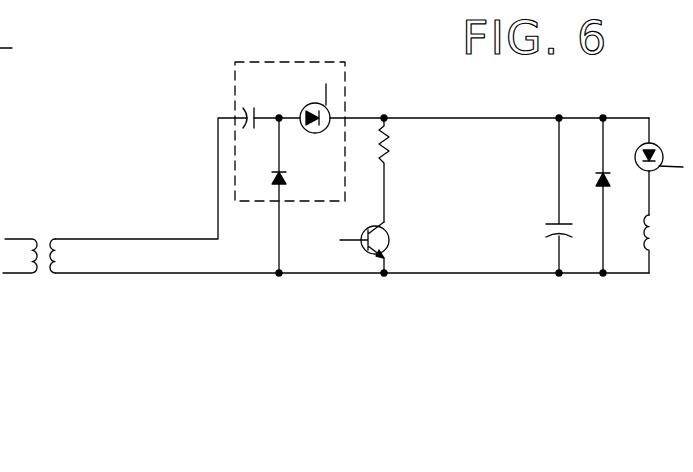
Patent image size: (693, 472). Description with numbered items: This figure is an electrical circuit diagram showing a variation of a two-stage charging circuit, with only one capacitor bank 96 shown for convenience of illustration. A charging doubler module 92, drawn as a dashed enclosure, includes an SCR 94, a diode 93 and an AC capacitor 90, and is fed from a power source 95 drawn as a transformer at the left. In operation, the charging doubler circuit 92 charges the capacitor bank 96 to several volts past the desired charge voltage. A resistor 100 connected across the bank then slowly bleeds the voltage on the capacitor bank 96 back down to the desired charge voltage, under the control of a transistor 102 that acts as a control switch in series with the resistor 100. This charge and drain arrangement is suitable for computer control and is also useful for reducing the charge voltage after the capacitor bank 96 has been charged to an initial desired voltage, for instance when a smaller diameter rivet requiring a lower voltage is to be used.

The AC capacitor 90 is at (253, 112).
The charging doubler module 92 is at (262, 62).
The diode 93 is at (285, 183).
The SCR 94 is at (324, 110).
The power source 95 is at (50, 238).
The capacitor bank 96 is at (556, 225).
The resistor 100 is at (395, 145).
The transistor 102 is at (385, 232).